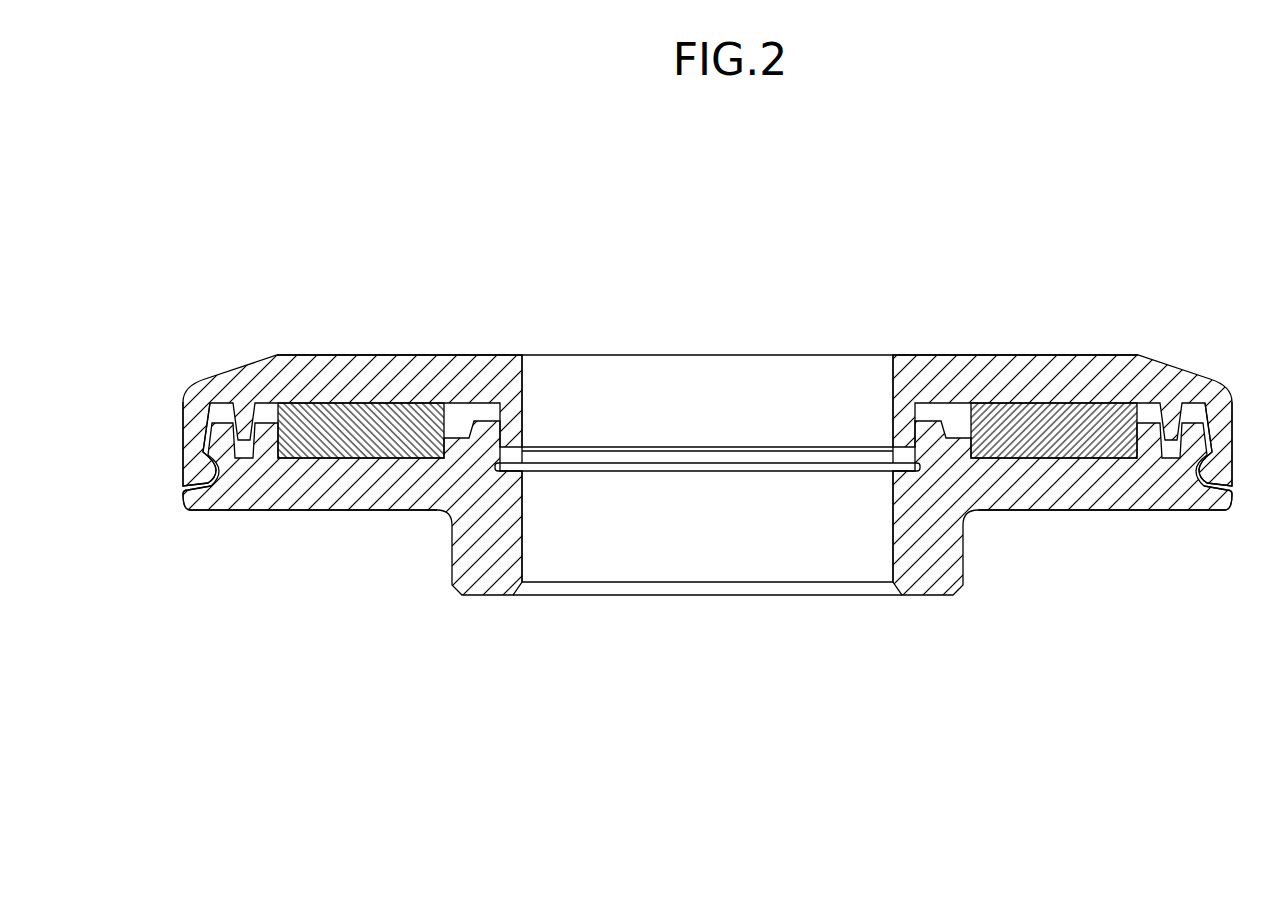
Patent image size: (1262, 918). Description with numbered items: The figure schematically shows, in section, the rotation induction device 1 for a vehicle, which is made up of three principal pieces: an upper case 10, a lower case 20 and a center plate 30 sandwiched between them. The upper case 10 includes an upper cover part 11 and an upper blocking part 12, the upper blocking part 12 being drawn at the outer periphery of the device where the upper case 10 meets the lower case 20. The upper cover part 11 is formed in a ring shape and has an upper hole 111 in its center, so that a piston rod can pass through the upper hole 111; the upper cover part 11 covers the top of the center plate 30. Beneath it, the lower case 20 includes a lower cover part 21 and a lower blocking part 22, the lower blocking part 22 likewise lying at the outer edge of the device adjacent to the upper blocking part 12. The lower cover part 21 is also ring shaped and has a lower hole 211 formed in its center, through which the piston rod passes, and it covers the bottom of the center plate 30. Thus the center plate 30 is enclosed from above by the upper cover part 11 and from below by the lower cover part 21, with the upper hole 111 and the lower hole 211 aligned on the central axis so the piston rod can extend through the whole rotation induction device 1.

The rotation induction device 1 is at (1209, 199).
The upper case 10 is at (946, 351).
The upper cover part 11 is at (443, 355).
The upper hole 111 is at (611, 379).
The upper blocking part 12 is at (183, 433).
The lower case 20 is at (1058, 518).
The lower cover part 21 is at (333, 512).
The lower blocking part 22 is at (188, 515).
The lower hole 211 is at (697, 558).
The center plate 30 is at (1108, 421).